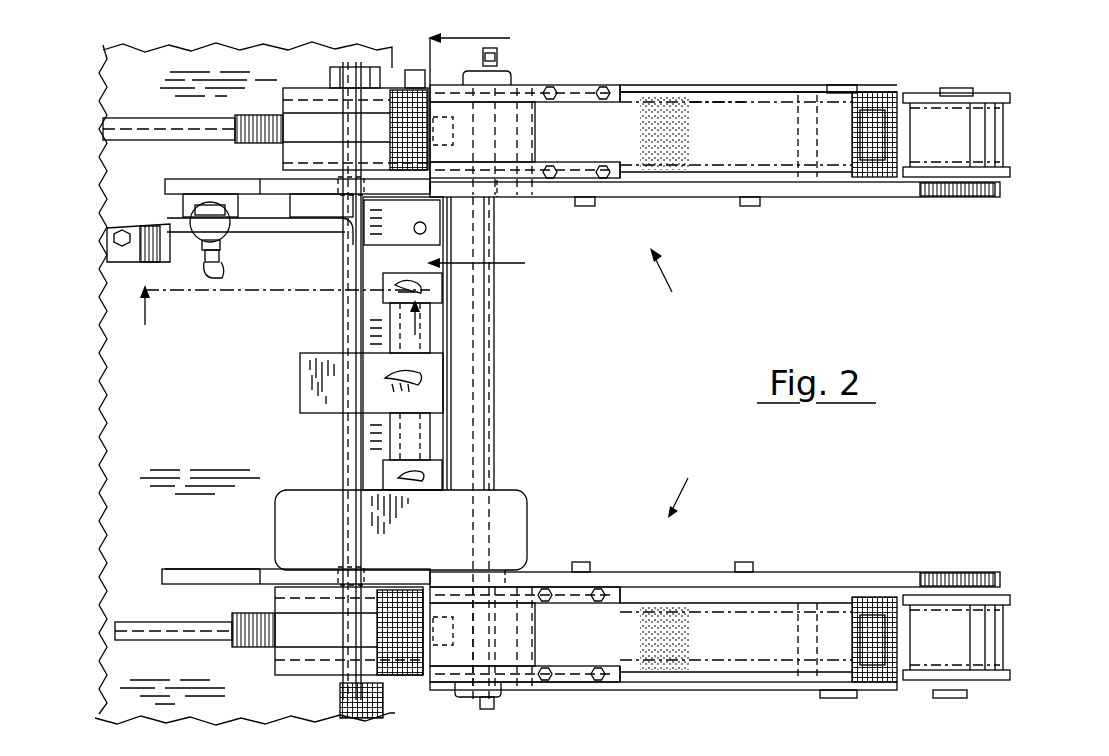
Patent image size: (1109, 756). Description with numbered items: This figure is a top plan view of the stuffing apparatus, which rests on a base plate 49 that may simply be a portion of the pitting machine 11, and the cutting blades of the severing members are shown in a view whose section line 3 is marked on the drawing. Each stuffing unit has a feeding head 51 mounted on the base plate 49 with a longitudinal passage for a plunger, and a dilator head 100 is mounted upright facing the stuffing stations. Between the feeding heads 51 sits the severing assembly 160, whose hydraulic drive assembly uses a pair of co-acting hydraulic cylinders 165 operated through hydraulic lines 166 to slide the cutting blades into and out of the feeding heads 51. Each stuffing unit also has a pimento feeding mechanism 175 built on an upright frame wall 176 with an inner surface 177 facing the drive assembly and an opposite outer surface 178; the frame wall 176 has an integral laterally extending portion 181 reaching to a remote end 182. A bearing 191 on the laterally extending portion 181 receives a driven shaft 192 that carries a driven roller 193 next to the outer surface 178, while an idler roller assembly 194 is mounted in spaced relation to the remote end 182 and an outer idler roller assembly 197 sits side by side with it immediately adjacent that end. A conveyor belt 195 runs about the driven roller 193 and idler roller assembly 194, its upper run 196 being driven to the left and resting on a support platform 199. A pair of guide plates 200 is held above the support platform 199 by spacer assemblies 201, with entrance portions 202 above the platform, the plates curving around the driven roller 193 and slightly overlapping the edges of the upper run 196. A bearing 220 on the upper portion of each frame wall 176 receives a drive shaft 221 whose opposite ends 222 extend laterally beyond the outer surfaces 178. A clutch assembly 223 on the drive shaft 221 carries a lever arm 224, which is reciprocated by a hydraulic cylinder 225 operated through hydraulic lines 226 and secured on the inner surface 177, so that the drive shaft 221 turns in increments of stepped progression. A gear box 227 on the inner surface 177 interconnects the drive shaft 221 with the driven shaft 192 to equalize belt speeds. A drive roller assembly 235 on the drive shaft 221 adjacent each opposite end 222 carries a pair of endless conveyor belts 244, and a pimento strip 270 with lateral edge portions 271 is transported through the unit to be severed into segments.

The section line 3- 3 is at (482, 152).
The pitting machine 11 is at (280, 319).
The base plate 49 is at (198, 442).
The feeding head 51 is at (263, 116).
The dilator head 100 is at (492, 62).
The severing assembly 160 is at (458, 351).
The hydraulic cylinders 165 is at (438, 330).
The hydraulic lines 166 is at (423, 473).
The pimento feeding mechanism 175 is at (680, 383).
The frame wall 176 is at (165, 187).
The inner surface 177 is at (283, 195).
The outer surface 178 is at (217, 178).
The laterally extending portion 181 is at (686, 198).
The remote end 182 is at (995, 197).
The bearing 191 is at (497, 198).
The driven shaft 192 is at (496, 395).
The driven roller 193 is at (520, 90).
The idler roller assembly 194 is at (876, 92).
The conveyor belt 195 is at (872, 160).
The upper run 196 is at (717, 150).
The outer idler roller assembly 197 is at (923, 93).
The support platform 199 is at (698, 83).
The guide plates 200 is at (583, 88).
The spacer assemblies 201 is at (606, 164).
The entrance portions 202 is at (623, 92).
The bearing 220 is at (337, 188).
The drive shaft 221 is at (343, 326).
The opposite ends 222 is at (358, 67).
The clutch assembly 223 is at (358, 222).
The lever arm 224 is at (257, 230).
The hydraulic cylinder 225 is at (185, 233).
The hydraulic lines 226 is at (222, 268).
The gear box 227 is at (405, 538).
The drive roller assembly 235 is at (300, 88).
The endless conveyor belts 244 is at (297, 149).
The pimento strip 270 is at (712, 106).
The lateral edge portions 271 is at (745, 102).